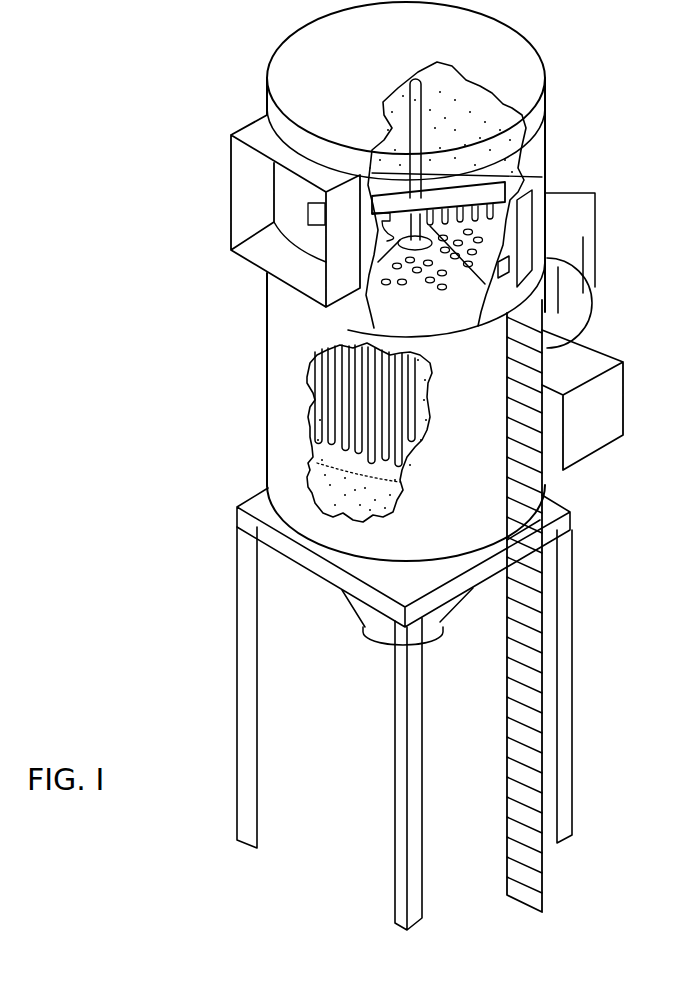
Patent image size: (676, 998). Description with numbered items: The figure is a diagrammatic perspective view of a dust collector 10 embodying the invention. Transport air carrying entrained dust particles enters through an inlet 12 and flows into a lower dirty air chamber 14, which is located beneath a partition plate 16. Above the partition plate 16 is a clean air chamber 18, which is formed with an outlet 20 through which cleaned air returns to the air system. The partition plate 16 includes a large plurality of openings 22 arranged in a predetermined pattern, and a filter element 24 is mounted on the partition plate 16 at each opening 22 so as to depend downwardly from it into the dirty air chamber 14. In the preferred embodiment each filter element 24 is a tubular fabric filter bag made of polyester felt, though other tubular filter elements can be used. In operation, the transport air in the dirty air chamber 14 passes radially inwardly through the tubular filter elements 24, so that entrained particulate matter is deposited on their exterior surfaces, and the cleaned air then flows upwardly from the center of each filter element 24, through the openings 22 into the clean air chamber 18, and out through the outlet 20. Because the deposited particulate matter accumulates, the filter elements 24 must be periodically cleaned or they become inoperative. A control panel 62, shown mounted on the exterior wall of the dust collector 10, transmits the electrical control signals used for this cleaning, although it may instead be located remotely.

The dust collector 10 is at (549, 164).
The inlet 12 is at (578, 440).
The dirty air chamber 14 is at (318, 488).
The partition plate 16 is at (397, 317).
The clean air chamber 18 is at (506, 164).
The outlet 20 is at (247, 210).
The openings 22 is at (578, 329).
The filter element 24 is at (333, 413).
The control panel 62 is at (588, 296).